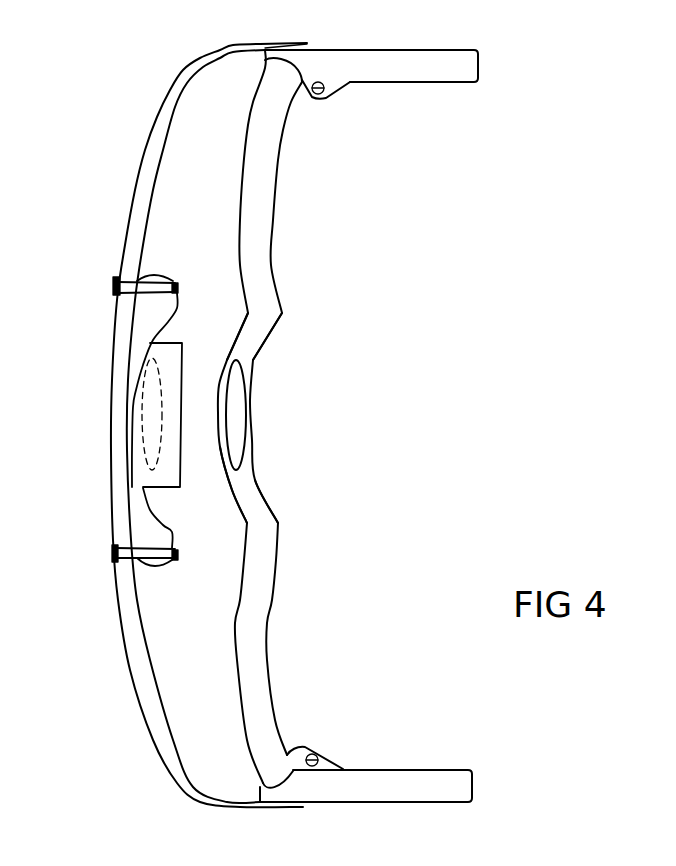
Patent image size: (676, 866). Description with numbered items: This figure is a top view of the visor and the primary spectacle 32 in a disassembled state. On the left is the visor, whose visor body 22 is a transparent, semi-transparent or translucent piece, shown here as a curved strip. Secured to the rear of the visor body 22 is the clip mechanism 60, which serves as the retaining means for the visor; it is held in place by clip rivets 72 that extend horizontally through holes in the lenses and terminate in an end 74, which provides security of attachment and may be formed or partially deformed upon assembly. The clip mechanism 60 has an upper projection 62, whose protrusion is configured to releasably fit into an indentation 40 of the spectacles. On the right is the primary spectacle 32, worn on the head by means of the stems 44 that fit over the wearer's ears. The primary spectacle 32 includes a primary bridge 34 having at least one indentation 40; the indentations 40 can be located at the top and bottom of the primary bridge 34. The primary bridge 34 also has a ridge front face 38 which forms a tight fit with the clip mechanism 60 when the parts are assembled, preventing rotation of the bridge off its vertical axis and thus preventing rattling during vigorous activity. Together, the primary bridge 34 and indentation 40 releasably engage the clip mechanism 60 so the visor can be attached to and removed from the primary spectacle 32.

The visor body 22 is at (133, 647).
The primary spectacle 32 is at (312, 258).
The primary bridge 34 is at (267, 358).
The ridge front face 38 is at (252, 495).
The indentation 40 is at (237, 425).
The stems 44 is at (432, 70).
The clip mechanism 60 is at (167, 262).
The upper projection 62 is at (163, 353).
The clip rivets 72 is at (168, 288).
The end 74 is at (113, 550).